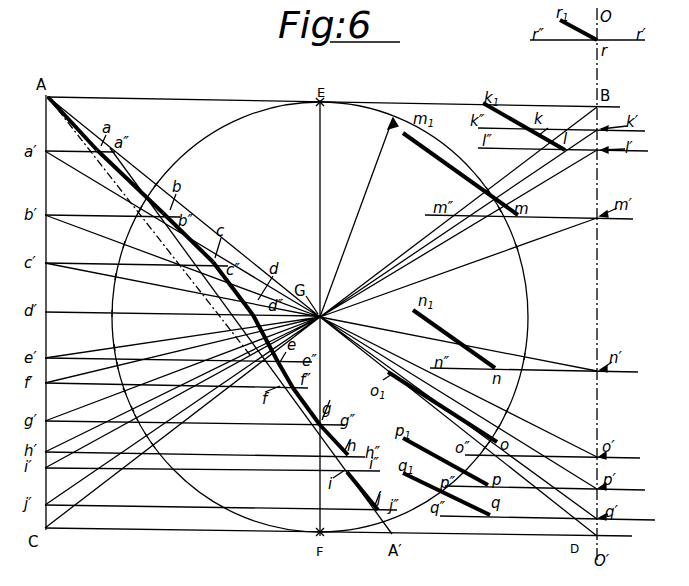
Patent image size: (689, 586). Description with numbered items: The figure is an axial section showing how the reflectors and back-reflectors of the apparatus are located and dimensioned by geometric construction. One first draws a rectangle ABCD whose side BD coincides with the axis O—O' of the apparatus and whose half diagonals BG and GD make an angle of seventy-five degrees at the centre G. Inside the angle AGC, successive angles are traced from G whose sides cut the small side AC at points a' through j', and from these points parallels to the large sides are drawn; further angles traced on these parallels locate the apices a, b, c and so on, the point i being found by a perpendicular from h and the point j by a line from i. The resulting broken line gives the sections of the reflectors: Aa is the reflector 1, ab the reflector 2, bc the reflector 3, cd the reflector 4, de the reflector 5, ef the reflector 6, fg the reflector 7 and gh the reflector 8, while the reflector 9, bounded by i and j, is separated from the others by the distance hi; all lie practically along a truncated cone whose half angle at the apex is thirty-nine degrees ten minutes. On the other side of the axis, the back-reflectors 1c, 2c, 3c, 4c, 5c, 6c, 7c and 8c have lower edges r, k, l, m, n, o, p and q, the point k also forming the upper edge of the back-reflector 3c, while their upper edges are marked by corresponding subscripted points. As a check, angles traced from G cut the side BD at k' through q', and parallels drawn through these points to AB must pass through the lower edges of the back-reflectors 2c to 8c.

The reflector 1 is at (75, 127).
The reflector 2 is at (133, 188).
The reflector 3 is at (185, 236).
The reflector 4 is at (239, 297).
The reflector 5 is at (267, 344).
The reflector 6 is at (284, 374).
The reflector 7 is at (302, 401).
The reflector 8 is at (331, 437).
The reflector 9 is at (363, 493).
The back-reflector 1c is at (586, 34).
The back-reflector 2c is at (492, 110).
The back-reflector 3c is at (538, 136).
The back-reflector 4c is at (432, 152).
The back-reflector 5c is at (442, 332).
The back-reflector 6c is at (452, 413).
The back-reflector 7c is at (440, 459).
The back-reflector 8c is at (445, 493).